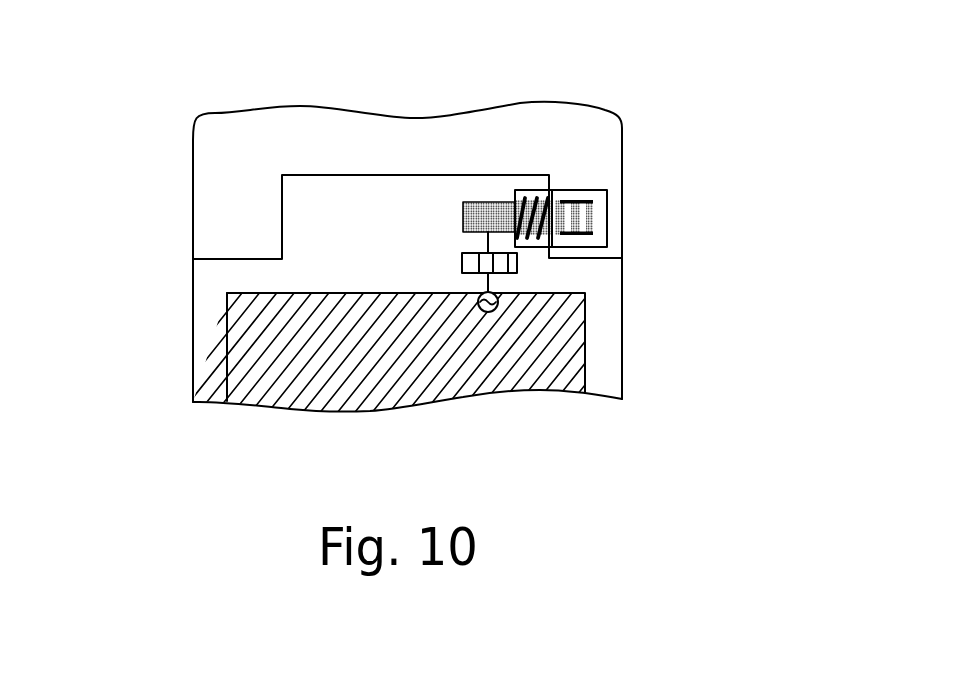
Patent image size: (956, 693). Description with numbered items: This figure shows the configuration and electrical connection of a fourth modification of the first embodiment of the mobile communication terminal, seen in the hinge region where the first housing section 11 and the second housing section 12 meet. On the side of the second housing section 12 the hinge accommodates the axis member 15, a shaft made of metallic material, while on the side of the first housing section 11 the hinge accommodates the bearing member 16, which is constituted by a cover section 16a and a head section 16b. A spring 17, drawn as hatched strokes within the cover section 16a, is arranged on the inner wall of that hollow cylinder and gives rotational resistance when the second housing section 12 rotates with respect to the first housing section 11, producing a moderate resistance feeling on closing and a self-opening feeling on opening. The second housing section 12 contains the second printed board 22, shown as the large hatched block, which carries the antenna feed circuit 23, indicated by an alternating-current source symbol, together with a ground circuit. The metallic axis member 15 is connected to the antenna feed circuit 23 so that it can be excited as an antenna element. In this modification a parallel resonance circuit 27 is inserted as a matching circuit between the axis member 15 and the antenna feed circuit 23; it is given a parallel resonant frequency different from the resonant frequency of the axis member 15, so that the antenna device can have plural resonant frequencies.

The first housing section 11 is at (192, 173).
The second housing section 12 is at (192, 300).
The second printed board 22 is at (227, 353).
The antenna feed circuit 23 is at (492, 312).
The parallel resonance circuit 27 is at (517, 263).
The axis member 15 is at (593, 219).
The bearing member 16 is at (667, 53).
The cover section 16a is at (536, 190).
The head section 16b is at (578, 190).
The spring 17 is at (524, 198).